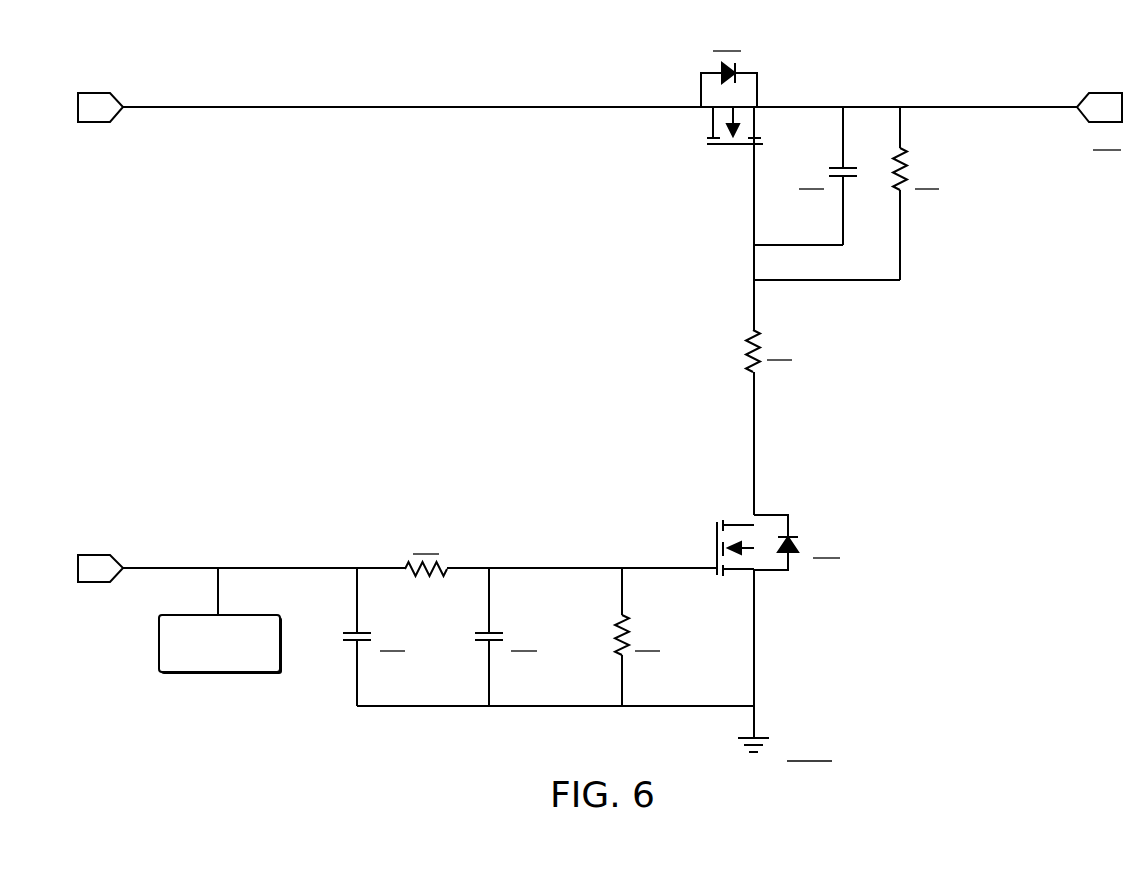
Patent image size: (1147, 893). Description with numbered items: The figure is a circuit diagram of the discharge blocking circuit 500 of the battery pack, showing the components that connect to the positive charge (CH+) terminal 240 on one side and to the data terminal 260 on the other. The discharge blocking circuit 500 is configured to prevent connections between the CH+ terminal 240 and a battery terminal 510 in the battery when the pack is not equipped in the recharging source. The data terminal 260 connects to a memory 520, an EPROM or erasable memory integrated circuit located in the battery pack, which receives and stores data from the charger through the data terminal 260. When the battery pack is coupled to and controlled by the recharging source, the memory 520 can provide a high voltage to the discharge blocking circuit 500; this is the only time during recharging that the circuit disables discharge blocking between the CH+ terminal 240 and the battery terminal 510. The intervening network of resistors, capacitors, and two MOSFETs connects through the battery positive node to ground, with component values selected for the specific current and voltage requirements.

The positive charge (CH+) terminal 240 is at (95, 93).
The data terminal 260 is at (93, 555).
The battery terminal 510 is at (1105, 93).
The memory 520 is at (159, 643).
The discharge blocking circuit 500 is at (1012, 656).